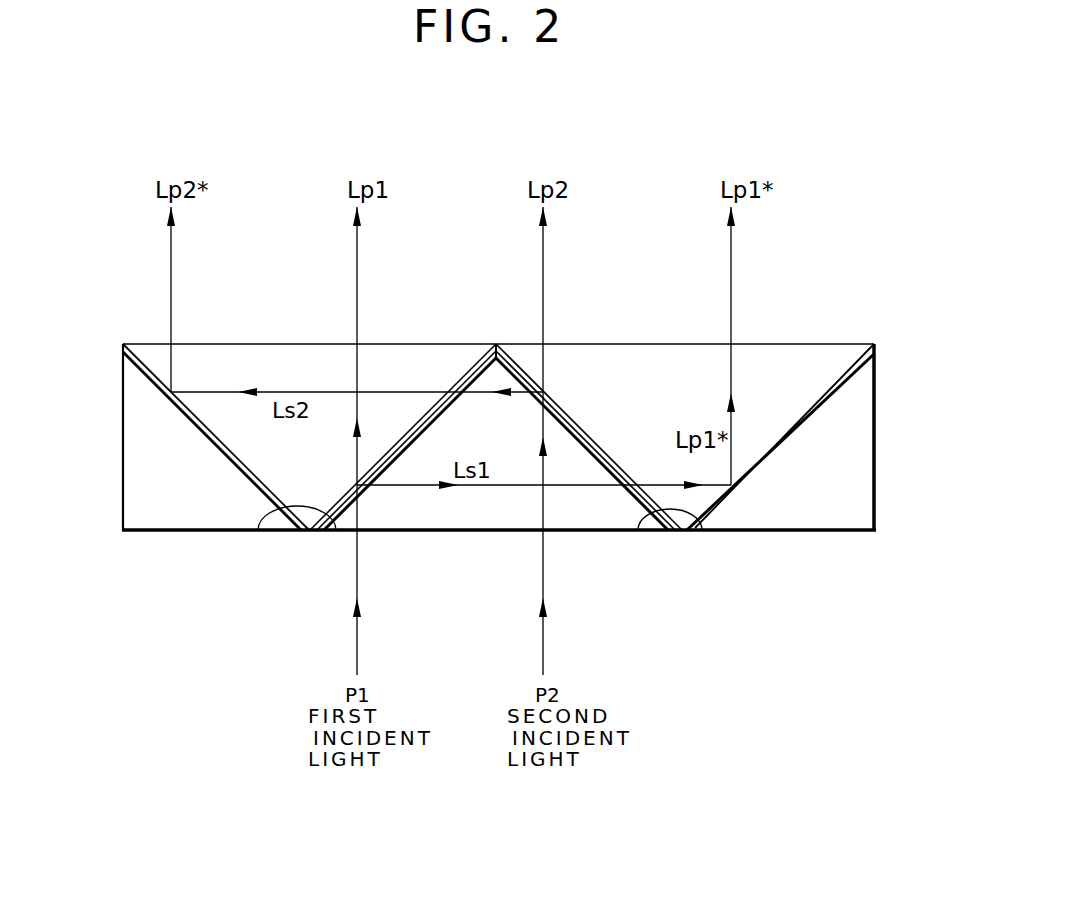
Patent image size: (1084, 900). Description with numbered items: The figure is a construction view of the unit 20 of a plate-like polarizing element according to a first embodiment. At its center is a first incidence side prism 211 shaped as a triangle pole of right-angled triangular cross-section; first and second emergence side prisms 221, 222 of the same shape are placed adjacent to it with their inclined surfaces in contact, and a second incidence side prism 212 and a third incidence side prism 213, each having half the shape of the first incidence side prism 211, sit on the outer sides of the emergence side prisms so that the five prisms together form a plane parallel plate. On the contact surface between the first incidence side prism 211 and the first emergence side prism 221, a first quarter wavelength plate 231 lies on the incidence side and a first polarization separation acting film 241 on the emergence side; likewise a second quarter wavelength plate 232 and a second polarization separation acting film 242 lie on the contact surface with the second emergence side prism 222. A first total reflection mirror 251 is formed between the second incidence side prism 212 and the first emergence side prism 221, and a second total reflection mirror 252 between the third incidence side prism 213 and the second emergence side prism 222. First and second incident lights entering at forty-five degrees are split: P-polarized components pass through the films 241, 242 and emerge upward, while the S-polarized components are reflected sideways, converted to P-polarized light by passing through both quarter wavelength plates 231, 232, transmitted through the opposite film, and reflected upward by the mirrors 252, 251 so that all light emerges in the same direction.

The unit of plate-like polarizing element 20 is at (622, 276).
The first incidence side prism 211 is at (459, 524).
The second incidence side prism 212 is at (137, 389).
The third incidence side prism 213 is at (866, 430).
The first emergence side prism 221 is at (228, 352).
The second emergence side prism 222 is at (781, 353).
The first quarter wavelength plate 231 is at (328, 526).
The second quarter wavelength plate 232 is at (652, 524).
The first polarization separation acting film 241 is at (272, 524).
The second polarization separation acting film 242 is at (702, 528).
The first total reflection mirror 251 is at (183, 412).
The second total reflection mirror 252 is at (850, 374).